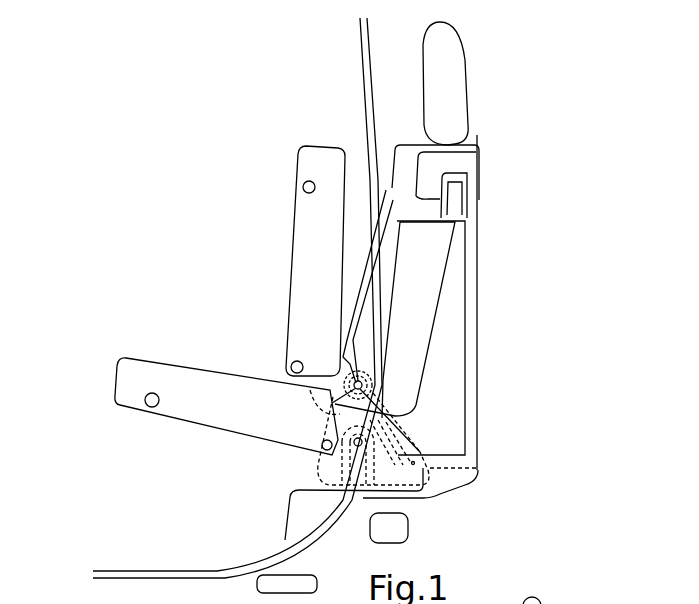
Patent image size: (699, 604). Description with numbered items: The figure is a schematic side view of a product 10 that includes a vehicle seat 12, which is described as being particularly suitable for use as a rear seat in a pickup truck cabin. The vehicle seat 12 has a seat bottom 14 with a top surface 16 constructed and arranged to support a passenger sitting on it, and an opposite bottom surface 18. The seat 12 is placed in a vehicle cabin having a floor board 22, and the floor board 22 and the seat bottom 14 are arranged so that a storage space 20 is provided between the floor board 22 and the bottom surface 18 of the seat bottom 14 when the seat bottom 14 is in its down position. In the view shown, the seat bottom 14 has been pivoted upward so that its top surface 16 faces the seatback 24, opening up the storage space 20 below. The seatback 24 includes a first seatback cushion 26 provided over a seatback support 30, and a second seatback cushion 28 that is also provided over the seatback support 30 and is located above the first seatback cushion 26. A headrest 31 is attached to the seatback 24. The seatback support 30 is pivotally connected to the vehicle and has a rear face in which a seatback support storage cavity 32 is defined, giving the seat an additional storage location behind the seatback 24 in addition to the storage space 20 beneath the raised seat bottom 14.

The product 10 is at (559, 98).
The vehicle seat 12 is at (303, 88).
The seat bottom 14 is at (322, 147).
The top surface 16 is at (352, 208).
The bottom surface 18 is at (292, 258).
The storage space 20 is at (210, 492).
The floor board 22 is at (202, 571).
The seatback 24 is at (385, 172).
The first seatback cushion 26 is at (370, 250).
The second seatback cushion 28 is at (402, 156).
The seatback support 30 is at (437, 220).
The headrest 31 is at (466, 66).
The seatback support storage cavity 32 is at (468, 273).